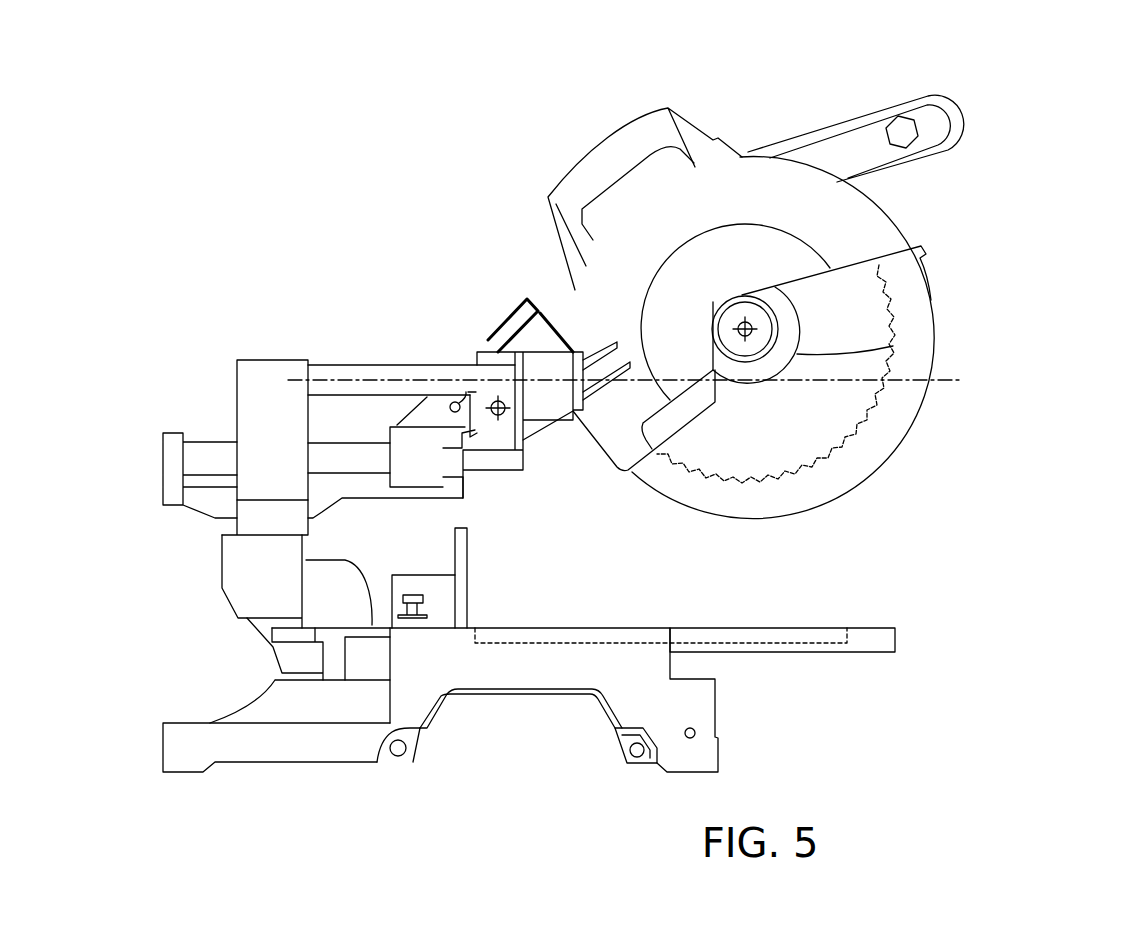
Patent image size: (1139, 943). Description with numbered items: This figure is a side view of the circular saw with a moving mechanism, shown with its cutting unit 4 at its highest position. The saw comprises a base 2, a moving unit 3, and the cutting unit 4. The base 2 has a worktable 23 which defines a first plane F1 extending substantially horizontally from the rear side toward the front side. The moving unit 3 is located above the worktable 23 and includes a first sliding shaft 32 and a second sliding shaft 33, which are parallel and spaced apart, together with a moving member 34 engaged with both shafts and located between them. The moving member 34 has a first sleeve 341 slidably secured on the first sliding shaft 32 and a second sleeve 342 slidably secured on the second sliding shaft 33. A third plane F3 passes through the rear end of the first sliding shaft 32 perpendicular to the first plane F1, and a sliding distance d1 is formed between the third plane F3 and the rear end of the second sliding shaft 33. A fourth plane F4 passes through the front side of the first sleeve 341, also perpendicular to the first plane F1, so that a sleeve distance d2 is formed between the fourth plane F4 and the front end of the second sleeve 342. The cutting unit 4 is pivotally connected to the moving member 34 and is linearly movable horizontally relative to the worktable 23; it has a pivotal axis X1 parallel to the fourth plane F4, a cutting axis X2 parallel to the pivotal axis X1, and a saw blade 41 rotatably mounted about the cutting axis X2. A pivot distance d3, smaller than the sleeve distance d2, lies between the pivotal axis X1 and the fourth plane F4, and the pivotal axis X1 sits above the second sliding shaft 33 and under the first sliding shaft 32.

The base 2 is at (745, 750).
The worktable 23 is at (870, 640).
The moving unit 3 is at (383, 427).
The first sliding shaft 32 is at (348, 368).
The second sliding shaft 33 is at (210, 452).
The moving member 34 is at (589, 440).
The first sleeve 341 is at (548, 428).
The second sleeve 342 is at (420, 472).
The cutting unit 4 is at (771, 263).
The saw blade 41 is at (893, 275).
The pivotal axis X1 is at (497, 418).
The cutting axis X2 is at (745, 329).
The sliding distance d1 is at (183, 433).
The sleeve distance d2 is at (443, 478).
The pivot distance d3 is at (498, 420).
The first plane F1 is at (898, 628).
The third plane F3 is at (305, 222).
The fourth plane F4 is at (573, 222).